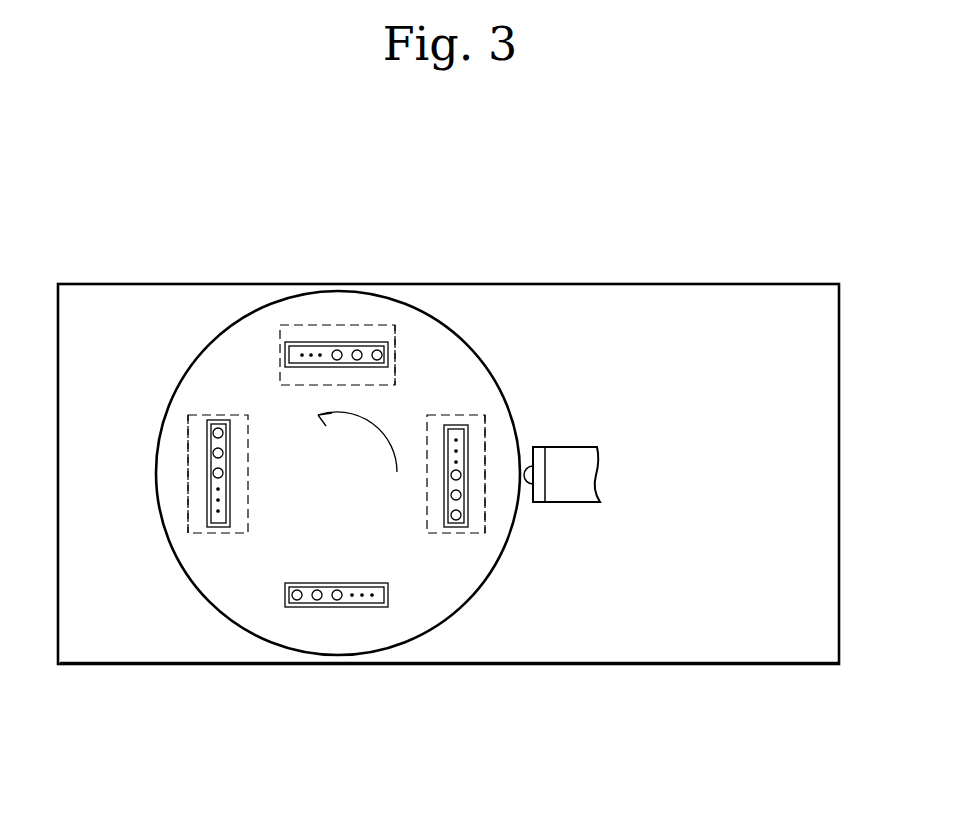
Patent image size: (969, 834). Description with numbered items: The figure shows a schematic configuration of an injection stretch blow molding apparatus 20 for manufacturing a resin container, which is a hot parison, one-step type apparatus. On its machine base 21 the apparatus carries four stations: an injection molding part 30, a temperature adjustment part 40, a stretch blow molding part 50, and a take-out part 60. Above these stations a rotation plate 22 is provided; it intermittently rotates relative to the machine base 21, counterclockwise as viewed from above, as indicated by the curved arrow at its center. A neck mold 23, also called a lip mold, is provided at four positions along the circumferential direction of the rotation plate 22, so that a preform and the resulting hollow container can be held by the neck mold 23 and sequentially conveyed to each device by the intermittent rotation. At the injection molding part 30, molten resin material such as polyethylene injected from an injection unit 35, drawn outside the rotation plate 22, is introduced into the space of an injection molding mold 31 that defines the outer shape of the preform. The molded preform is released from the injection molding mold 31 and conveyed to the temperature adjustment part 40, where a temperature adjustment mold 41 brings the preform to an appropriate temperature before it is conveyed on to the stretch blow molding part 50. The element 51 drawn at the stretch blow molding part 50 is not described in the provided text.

The injection stretch blow molding apparatus 20 is at (632, 252).
The machine base 21 is at (537, 632).
The rotation plate 22 is at (443, 325).
The neck mold 23 is at (335, 343).
The injection molding part 30 is at (503, 380).
The injection molding mold 31 is at (487, 432).
The injection unit 35 is at (567, 503).
The temperature adjustment part 40 is at (350, 278).
The temperature adjustment mold 41 is at (380, 323).
The stretch blow molding part 50 is at (158, 398).
The second station frame 51 is at (190, 447).
The take-out part 60 is at (357, 677).